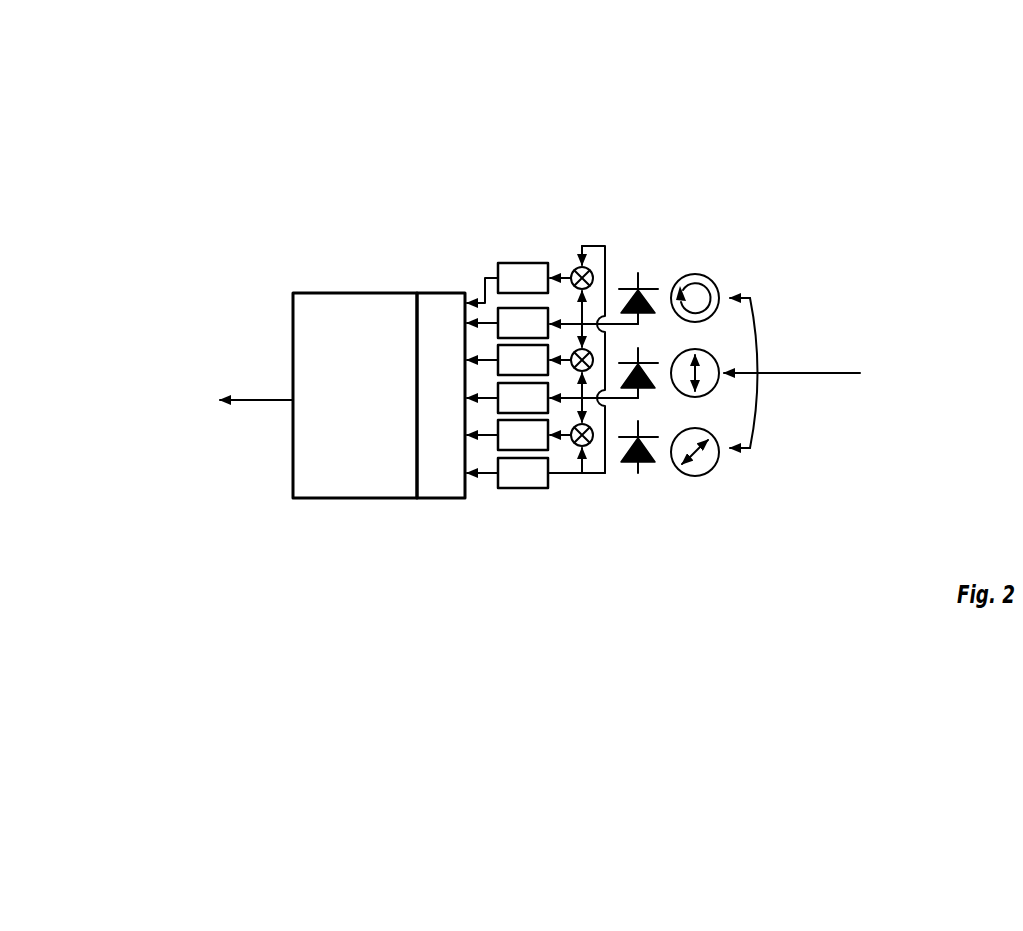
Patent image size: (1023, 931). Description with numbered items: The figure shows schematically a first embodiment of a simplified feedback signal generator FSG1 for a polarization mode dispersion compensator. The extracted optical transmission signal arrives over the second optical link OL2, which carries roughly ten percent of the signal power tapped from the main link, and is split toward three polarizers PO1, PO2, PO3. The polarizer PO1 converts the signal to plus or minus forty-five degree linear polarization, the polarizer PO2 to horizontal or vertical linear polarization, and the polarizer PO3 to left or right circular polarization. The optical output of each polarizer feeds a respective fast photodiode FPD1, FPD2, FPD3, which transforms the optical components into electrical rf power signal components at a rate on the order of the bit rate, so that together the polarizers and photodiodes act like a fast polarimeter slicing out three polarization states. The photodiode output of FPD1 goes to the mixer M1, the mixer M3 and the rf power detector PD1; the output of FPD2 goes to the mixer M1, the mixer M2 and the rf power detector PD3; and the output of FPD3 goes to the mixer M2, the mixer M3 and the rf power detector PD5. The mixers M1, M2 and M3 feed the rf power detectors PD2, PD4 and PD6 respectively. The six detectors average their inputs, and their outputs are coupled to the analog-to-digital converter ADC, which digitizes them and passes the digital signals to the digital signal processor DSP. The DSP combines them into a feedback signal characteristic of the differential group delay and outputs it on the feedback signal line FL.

The feedback signal generator FSG1 is at (266, 127).
The digital signal processor DSP is at (313, 463).
The analog-to-digital converter ADC is at (437, 367).
The feedback signal line FL is at (233, 398).
The rf power detector PD1 is at (513, 476).
The rf power detector PD2 is at (498, 437).
The rf power detector PD3 is at (496, 399).
The rf power detector PD4 is at (510, 363).
The rf power detector PD5 is at (513, 323).
The rf power detector PD6 is at (525, 280).
The mixer M1 is at (575, 446).
The mixer M2 is at (593, 366).
The mixer M3 is at (575, 268).
The fast photodiode FPD1 is at (633, 466).
The fast photodiode FPD2 is at (654, 384).
The fast photodiode FPD3 is at (628, 288).
The polarizer PO1 is at (699, 474).
The polarizer PO2 is at (717, 392).
The polarizer PO3 is at (712, 284).
The second optical link OL2 is at (843, 373).